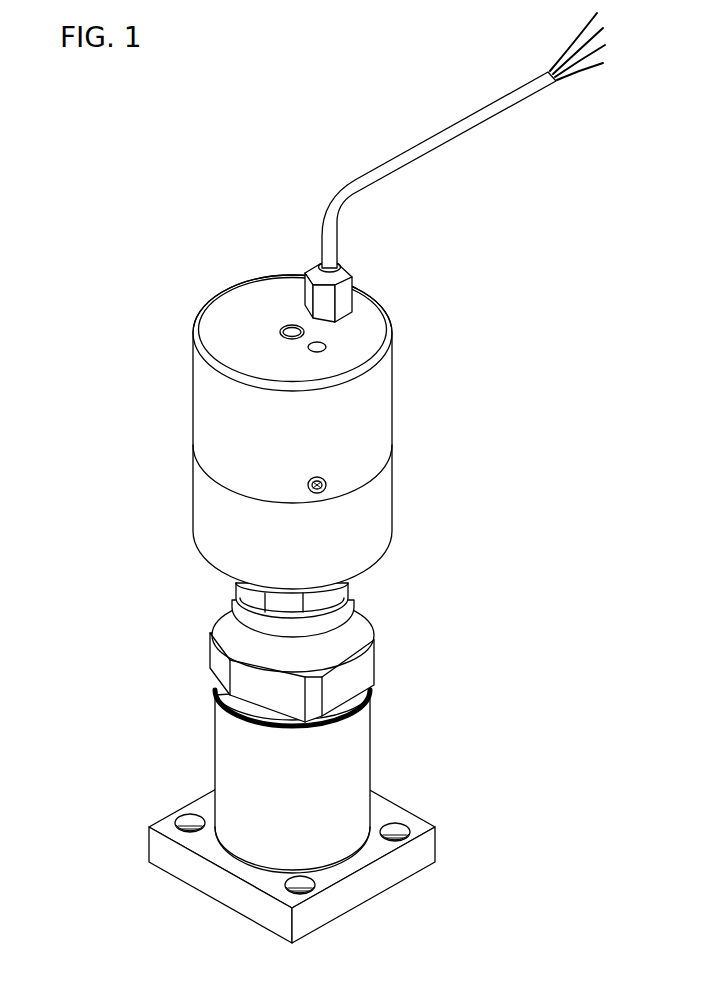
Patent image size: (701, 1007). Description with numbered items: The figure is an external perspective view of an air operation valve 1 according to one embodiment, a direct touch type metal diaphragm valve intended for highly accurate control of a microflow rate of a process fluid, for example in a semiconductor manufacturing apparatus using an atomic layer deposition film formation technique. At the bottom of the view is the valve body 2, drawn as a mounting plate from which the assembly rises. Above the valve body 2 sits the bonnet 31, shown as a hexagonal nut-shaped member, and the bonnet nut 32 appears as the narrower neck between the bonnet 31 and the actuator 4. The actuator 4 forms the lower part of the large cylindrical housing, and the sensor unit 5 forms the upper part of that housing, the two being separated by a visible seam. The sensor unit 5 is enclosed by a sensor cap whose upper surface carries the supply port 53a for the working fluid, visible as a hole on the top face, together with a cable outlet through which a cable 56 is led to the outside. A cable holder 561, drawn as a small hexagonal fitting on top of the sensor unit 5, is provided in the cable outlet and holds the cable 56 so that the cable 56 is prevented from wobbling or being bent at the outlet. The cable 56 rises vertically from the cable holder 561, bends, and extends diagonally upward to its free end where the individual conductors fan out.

The valve 1 is at (103, 172).
The valve body 2 is at (436, 845).
The bonnet 31 is at (375, 662).
The bonnet nut 32 is at (350, 597).
The actuator 4 is at (392, 500).
The sensor unit 5 is at (392, 388).
The supply port 53a is at (293, 321).
The cable 56 is at (357, 200).
The cable holder 561 is at (354, 281).